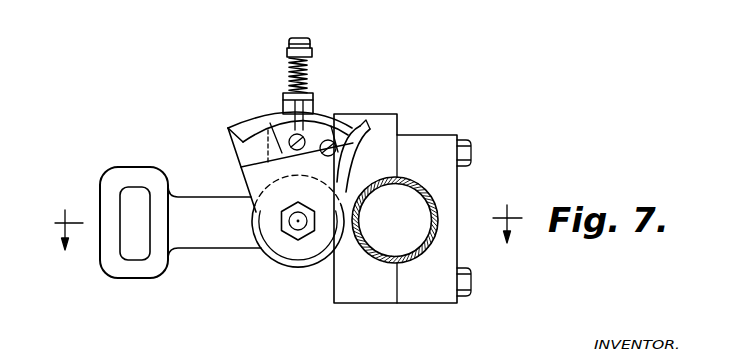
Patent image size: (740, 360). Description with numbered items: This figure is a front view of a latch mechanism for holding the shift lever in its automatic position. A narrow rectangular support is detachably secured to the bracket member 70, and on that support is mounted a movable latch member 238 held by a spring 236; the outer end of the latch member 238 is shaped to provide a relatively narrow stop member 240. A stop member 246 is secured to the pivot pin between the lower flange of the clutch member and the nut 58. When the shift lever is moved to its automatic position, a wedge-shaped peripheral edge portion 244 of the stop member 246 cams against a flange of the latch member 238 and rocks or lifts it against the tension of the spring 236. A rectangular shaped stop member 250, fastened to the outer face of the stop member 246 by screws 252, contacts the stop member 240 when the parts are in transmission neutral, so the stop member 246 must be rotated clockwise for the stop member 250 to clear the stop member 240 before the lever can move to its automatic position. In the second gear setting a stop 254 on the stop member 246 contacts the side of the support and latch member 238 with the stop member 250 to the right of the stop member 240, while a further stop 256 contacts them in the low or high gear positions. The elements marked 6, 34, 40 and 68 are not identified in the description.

The section line 6- 6 is at (288, 240).
The tubular member / shaft bore 34 is at (436, 200).
The operating handle 40 is at (226, 243).
The nut 58 is at (296, 238).
The pivot disc 68 is at (328, 264).
The bracket member 70 is at (444, 134).
The spring 236 is at (308, 72).
The movable latch member 238 is at (287, 93).
The stop member 240 is at (314, 106).
The wedge-shaped peripheral edge portion 244 is at (258, 122).
The stop member 246 is at (229, 145).
The rectangular shaped stop member 250 is at (345, 128).
The screws 252 is at (244, 164).
The stop 254 is at (228, 131).
The stop 256 is at (398, 128).